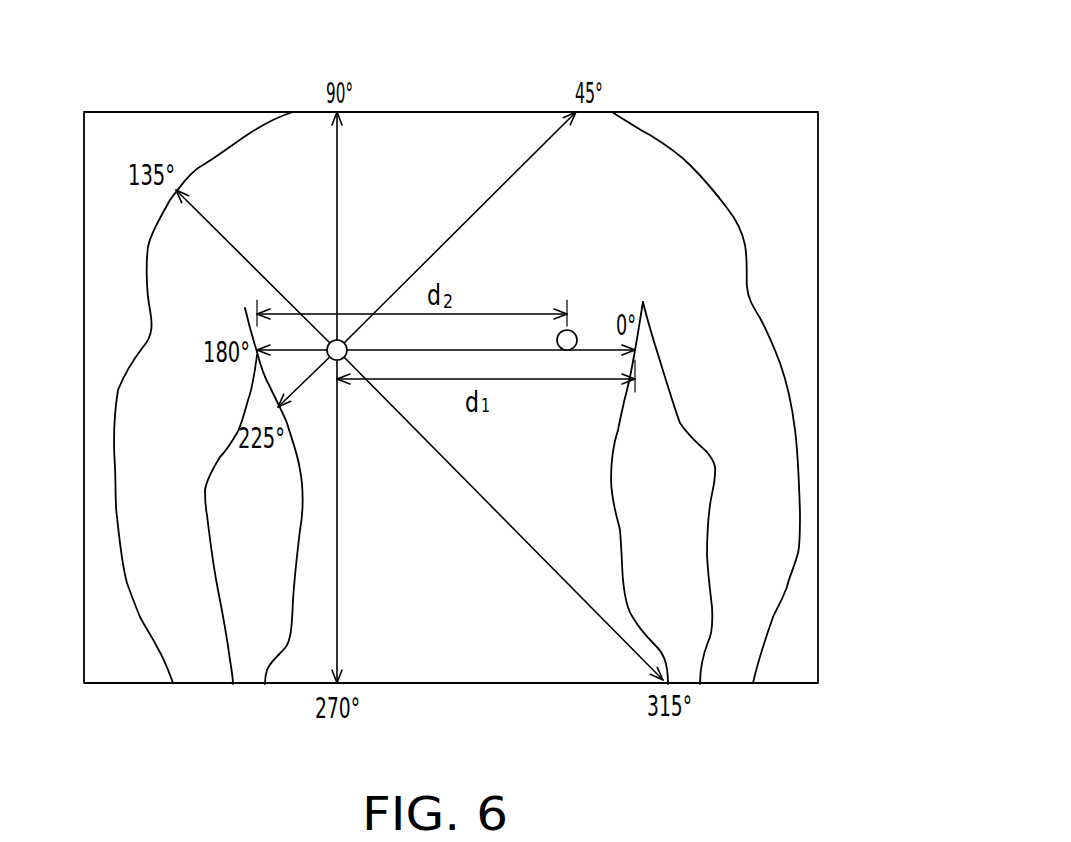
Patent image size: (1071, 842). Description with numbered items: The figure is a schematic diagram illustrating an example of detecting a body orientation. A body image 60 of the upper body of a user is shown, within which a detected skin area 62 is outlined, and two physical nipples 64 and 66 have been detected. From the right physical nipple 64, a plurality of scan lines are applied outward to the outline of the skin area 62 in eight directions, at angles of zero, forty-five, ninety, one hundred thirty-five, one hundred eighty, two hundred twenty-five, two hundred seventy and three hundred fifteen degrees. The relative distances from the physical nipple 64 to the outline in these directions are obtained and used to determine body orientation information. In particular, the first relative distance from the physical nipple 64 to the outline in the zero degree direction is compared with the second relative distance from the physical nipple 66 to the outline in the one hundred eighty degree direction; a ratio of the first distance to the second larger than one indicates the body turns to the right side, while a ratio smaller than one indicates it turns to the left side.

The body image 60 is at (700, 112).
The detected skin area 62 is at (743, 239).
The right physical nipple 64 is at (331, 341).
The physical nipple 66 is at (573, 331).